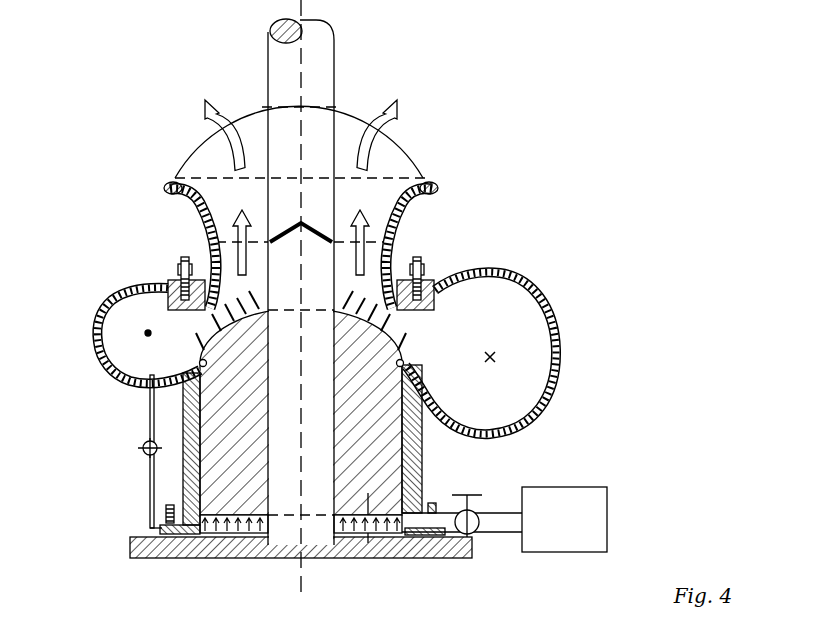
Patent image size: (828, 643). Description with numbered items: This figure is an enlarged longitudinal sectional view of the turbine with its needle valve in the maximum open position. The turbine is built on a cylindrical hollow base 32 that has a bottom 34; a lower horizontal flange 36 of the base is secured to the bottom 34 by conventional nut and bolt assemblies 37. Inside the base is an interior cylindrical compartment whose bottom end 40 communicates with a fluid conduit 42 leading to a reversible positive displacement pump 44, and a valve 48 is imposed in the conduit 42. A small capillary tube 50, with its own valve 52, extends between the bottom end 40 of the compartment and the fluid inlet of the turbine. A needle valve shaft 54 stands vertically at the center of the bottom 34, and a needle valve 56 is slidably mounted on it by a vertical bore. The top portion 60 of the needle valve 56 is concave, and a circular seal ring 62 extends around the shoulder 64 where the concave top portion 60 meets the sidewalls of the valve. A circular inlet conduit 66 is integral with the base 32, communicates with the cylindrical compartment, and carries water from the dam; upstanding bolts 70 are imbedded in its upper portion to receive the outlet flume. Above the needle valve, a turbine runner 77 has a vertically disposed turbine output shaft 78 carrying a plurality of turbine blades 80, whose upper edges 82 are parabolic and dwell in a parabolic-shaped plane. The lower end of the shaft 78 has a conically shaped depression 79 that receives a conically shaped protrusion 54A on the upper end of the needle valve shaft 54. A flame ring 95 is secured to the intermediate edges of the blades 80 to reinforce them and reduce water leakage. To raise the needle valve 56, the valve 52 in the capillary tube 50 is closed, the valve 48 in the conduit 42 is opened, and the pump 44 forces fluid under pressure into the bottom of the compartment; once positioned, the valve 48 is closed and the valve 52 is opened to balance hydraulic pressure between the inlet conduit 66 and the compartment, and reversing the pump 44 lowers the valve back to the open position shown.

The cylindrical hollow base 32 is at (423, 462).
The bottom 34 is at (131, 546).
The lower horizontal flange 36 is at (164, 523).
The nut and bolt assemblies 37 is at (170, 503).
The bottom end 40 is at (215, 536).
The fluid conduit 42 is at (487, 535).
The reversible positive displacement pump 44 is at (565, 553).
The valve 48 is at (467, 495).
The capillary tube 50 is at (150, 412).
The valve 52 is at (141, 449).
The needle valve shaft 54 is at (393, 250).
The conically shaped protrusion 54A is at (285, 246).
The needle valve 56 is at (368, 498).
The top portion 60 is at (222, 334).
The circular seal ring 62 is at (404, 362).
The shoulder 64 is at (201, 361).
The circular inlet conduit 66 is at (104, 311).
The upstanding bolts 70 is at (185, 262).
The turbine runner 77 is at (266, 62).
The turbine output shaft 78 is at (334, 60).
The conically shaped depression 79 is at (311, 268).
The turbine blades 80 is at (415, 141).
The upper edges 82 is at (396, 122).
The flame ring 95 is at (423, 172).